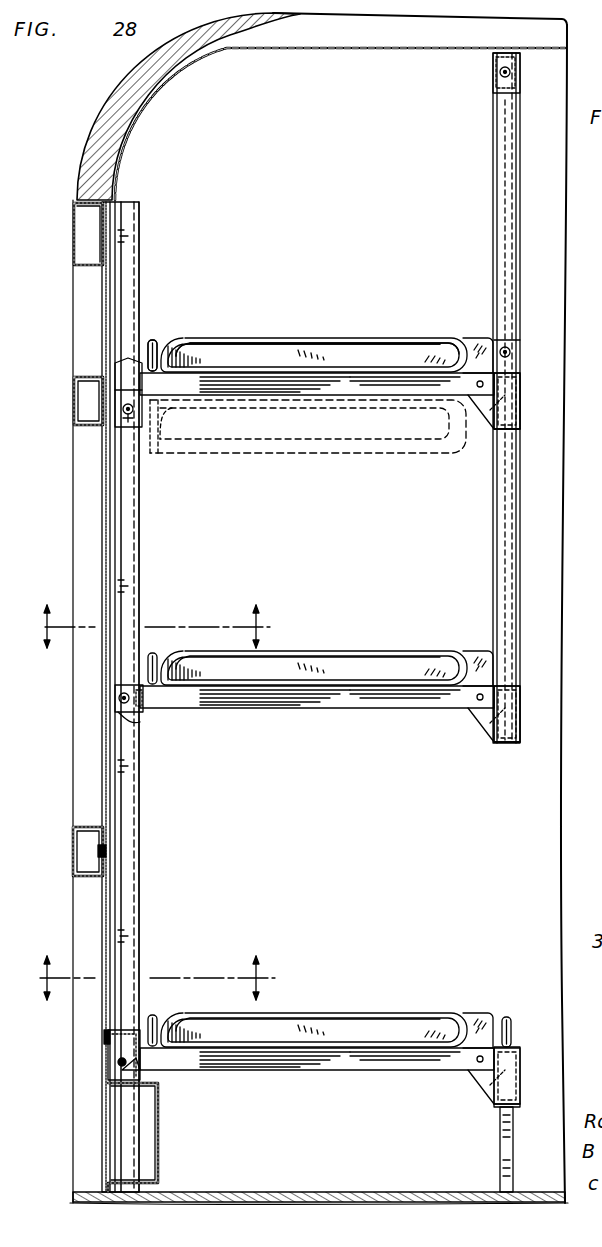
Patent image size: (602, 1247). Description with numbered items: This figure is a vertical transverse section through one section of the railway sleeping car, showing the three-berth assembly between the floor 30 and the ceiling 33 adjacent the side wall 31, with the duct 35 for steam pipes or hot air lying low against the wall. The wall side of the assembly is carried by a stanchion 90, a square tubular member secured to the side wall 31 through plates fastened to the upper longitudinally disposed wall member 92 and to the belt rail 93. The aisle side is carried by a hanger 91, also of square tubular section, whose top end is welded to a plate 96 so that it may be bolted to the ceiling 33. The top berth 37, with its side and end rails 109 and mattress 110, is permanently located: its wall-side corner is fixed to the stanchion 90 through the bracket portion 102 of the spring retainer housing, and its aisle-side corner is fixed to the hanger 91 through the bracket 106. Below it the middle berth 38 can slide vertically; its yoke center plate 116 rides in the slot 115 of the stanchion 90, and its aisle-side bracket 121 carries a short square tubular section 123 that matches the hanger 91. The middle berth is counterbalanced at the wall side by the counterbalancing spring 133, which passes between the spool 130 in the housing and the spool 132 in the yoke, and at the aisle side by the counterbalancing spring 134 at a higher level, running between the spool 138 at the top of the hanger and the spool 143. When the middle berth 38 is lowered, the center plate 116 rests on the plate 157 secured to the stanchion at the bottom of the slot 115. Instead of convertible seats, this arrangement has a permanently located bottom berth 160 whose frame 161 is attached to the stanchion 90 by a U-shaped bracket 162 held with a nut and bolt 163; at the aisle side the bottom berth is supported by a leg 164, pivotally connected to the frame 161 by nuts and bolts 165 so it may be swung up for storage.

The floor 30 is at (158, 626).
The side wall 31 is at (159, 978).
The ceiling 33 is at (318, 50).
The duct 35 is at (158, 1145).
The top berth 37 is at (338, 362).
The middle berth 38 is at (402, 458).
The stanchion 90 is at (139, 243).
The hanger 91 is at (494, 238).
The upper longitudinally disposed wall member 92 is at (74, 222).
The belt rail 93 is at (82, 827).
The plate 96 is at (492, 57).
The bracket portion 102 is at (146, 370).
The bracket 106 is at (496, 402).
The side and end rails 109 is at (304, 326).
The mattress 110 is at (248, 326).
The slot 115 is at (140, 497).
The center plate 116 is at (148, 660).
The bracket 121 is at (480, 722).
The short square tubular section 123 is at (494, 1078).
The spool 130 is at (130, 428).
The spool 132 is at (112, 700).
The counterbalancing spring 133 is at (123, 525).
The counterbalancing spring 134 is at (510, 160).
The spool 138 is at (496, 77).
The spool 143 is at (512, 352).
The plate 157 is at (140, 718).
The bottom berth 160 is at (362, 1070).
The frame 161 is at (216, 1060).
The U-shaped bracket 162 is at (128, 1055).
The nut and bolt 163 is at (118, 1062).
The leg 164 is at (508, 1146).
The nuts and bolts 165 is at (528, 1048).